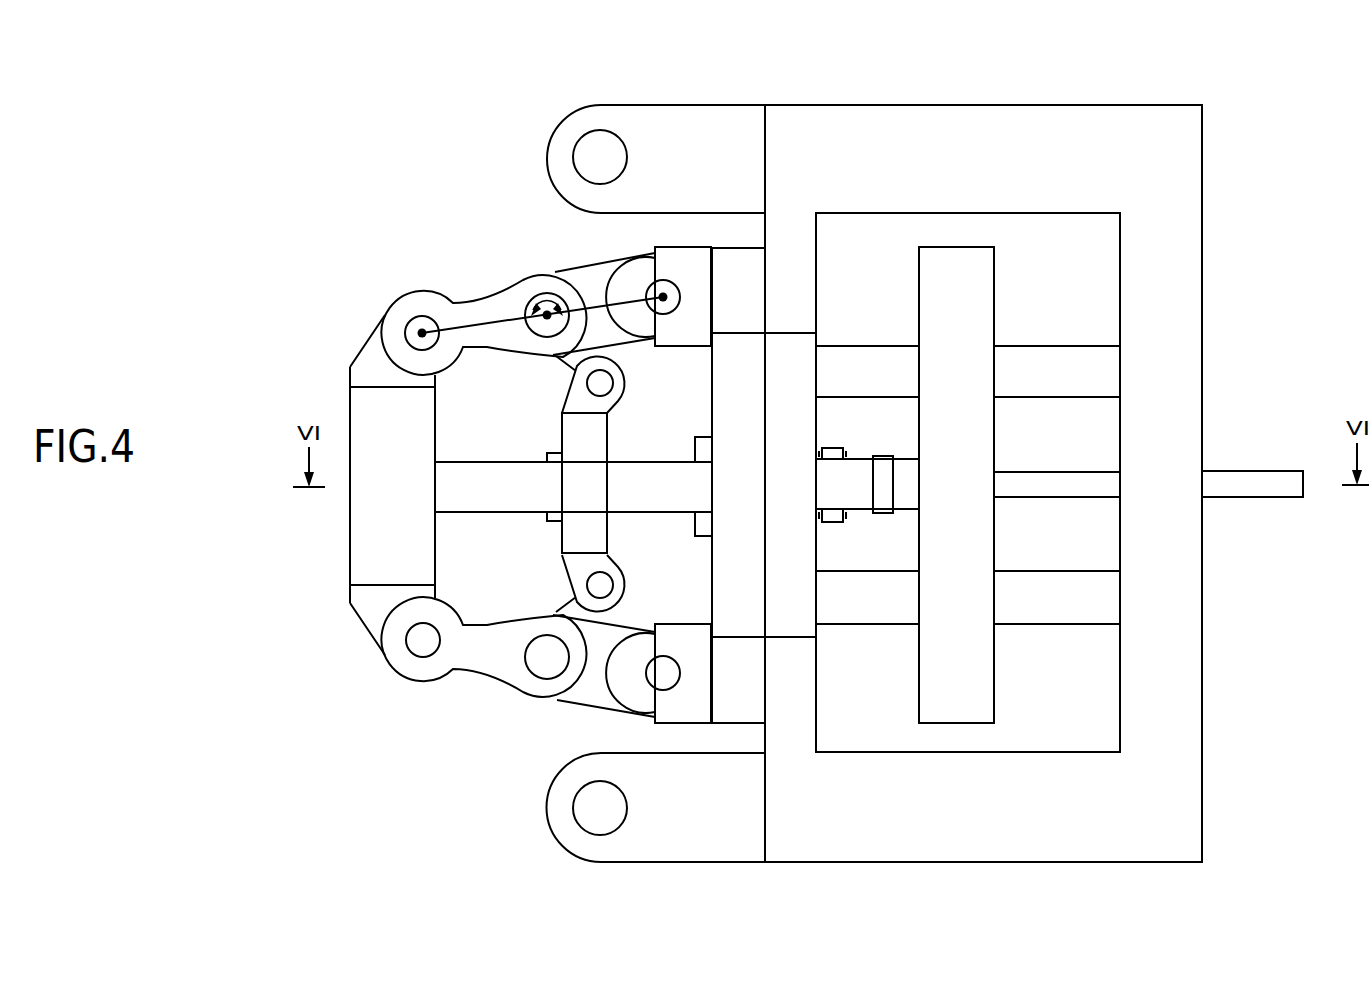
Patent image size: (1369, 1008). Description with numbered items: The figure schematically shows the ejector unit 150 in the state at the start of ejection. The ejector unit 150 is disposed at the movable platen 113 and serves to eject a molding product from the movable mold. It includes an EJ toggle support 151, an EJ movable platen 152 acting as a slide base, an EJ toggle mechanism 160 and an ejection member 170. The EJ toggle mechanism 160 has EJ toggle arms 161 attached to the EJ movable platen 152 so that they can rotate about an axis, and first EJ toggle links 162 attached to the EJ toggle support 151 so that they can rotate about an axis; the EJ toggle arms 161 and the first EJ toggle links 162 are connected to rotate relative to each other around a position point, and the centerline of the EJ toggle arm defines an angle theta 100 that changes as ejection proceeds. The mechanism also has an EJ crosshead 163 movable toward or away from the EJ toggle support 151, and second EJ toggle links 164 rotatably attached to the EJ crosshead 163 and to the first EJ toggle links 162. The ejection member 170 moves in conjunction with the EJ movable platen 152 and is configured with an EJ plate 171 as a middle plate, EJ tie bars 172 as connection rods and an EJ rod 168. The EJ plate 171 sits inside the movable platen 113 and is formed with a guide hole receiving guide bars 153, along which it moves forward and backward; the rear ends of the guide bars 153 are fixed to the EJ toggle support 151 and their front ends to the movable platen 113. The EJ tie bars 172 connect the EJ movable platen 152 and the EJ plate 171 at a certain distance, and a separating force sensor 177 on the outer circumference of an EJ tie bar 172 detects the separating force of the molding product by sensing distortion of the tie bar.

The angle θ 100 is at (547, 297).
The movable platen 113 is at (970, 123).
The ejector unit 150 is at (484, 438).
The EJ toggle support 151 is at (790, 338).
The EJ movable platen 152 is at (357, 393).
The guide bars 153 is at (1057, 363).
The EJ toggle mechanism 160 is at (505, 252).
The EJ toggle arms 161 is at (493, 308).
The first EJ toggle links 162 is at (602, 285).
The EJ crosshead 163 is at (580, 540).
The second EJ toggle links 164 is at (578, 373).
The EJ rod 168 is at (1057, 480).
The ejection member 170 is at (909, 289).
The EJ plate 171 is at (930, 540).
The EJ tie bars 172 is at (860, 472).
The separating force sensor 177 is at (880, 472).